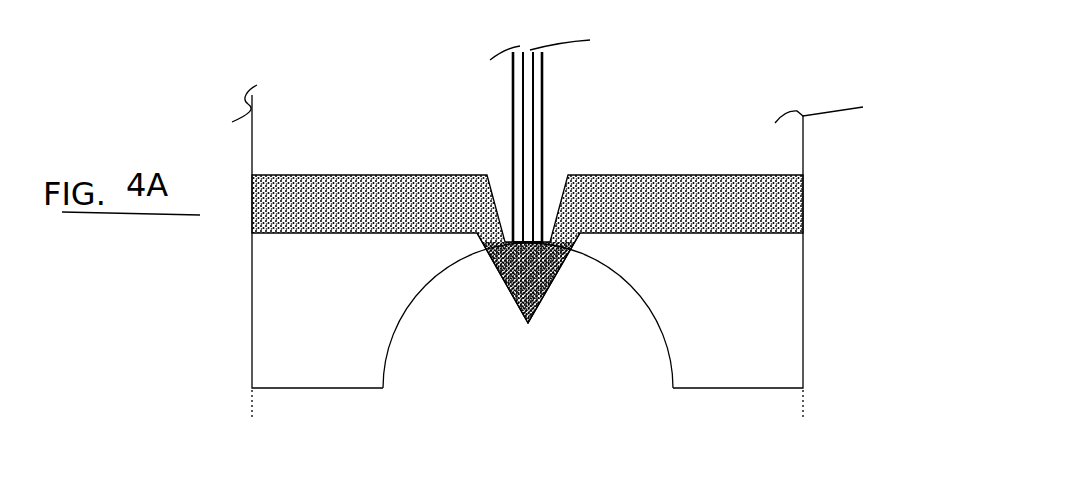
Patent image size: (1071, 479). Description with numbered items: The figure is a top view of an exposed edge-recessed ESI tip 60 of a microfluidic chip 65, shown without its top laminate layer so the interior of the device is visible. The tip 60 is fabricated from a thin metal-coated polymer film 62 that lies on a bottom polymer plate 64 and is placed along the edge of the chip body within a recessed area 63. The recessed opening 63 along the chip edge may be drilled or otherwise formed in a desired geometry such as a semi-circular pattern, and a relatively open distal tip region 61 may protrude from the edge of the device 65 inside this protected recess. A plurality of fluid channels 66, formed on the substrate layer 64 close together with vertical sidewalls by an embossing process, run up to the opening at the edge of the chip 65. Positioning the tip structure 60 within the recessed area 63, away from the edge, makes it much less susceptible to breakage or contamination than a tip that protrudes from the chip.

The edge-recessed ESI tip 60 is at (502, 322).
The distal tip region 61 is at (540, 290).
The thin metal-coated polymer film 62 is at (738, 208).
The recessed area 63 is at (605, 345).
The bottom polymer plate 64 is at (750, 297).
The microfluidic chip 65 is at (668, 63).
The fluid channels 66 is at (548, 94).